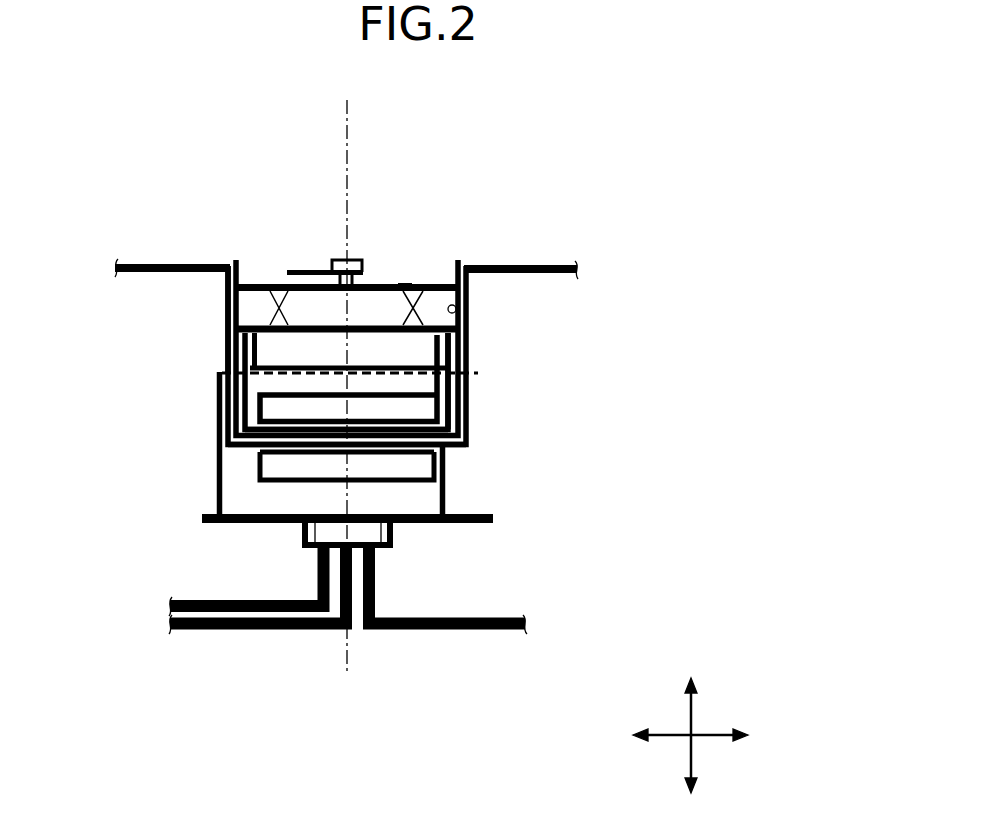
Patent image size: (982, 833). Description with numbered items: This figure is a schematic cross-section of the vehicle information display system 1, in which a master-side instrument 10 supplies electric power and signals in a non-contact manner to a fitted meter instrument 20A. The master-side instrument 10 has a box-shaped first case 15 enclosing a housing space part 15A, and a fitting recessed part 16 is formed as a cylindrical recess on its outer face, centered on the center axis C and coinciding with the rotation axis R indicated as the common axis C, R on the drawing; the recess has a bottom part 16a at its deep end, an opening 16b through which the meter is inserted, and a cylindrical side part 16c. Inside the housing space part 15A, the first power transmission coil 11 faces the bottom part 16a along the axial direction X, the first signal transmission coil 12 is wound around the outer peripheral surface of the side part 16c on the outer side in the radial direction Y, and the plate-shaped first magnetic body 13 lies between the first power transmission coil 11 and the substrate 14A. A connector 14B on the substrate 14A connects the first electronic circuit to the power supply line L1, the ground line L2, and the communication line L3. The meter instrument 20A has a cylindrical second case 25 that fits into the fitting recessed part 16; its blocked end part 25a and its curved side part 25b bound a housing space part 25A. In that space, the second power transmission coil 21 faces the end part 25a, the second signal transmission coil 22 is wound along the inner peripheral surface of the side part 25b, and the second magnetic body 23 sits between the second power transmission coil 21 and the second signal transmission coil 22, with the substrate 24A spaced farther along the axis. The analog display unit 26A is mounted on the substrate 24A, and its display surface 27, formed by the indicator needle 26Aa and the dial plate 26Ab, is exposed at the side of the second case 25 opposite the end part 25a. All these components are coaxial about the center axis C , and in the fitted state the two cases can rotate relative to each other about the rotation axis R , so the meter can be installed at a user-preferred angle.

The vehicle information display system 1 is at (696, 316).
The master-side instrument 10 is at (552, 436).
The first power transmission coil 11 is at (264, 448).
The first signal transmission coil 12 is at (220, 372).
The first magnetic body 13 is at (257, 467).
The substrate 14A is at (341, 650).
The connector 14B is at (306, 533).
The first case 15 is at (561, 268).
The housing space part 15A is at (505, 479).
The fitting recessed part 16 is at (342, 456).
The bottom part 16a is at (376, 448).
The opening 16b is at (230, 262).
The side part 16c is at (228, 300).
The meter instrument 20A is at (461, 243).
The second power transmission coil 21 is at (452, 304).
The second signal transmission coil 22 is at (368, 366).
The second magnetic body 23 is at (283, 392).
The substrate 24A is at (348, 207).
The second case 25 is at (341, 513).
The housing space part 25A is at (255, 332).
The end part 25a is at (415, 432).
The side part 25b is at (455, 358).
The display unit 26A is at (463, 181).
The indicator needle 26Aa is at (313, 270).
The dial plate 26Ab is at (387, 283).
The display surface 27 is at (408, 262).
The power supply line L1 is at (192, 599).
The ground line L2 is at (233, 632).
The communication line L3 is at (497, 632).
The center axis C, R is at (349, 117).
The axial direction X is at (692, 709).
The radial direction Y is at (716, 737).